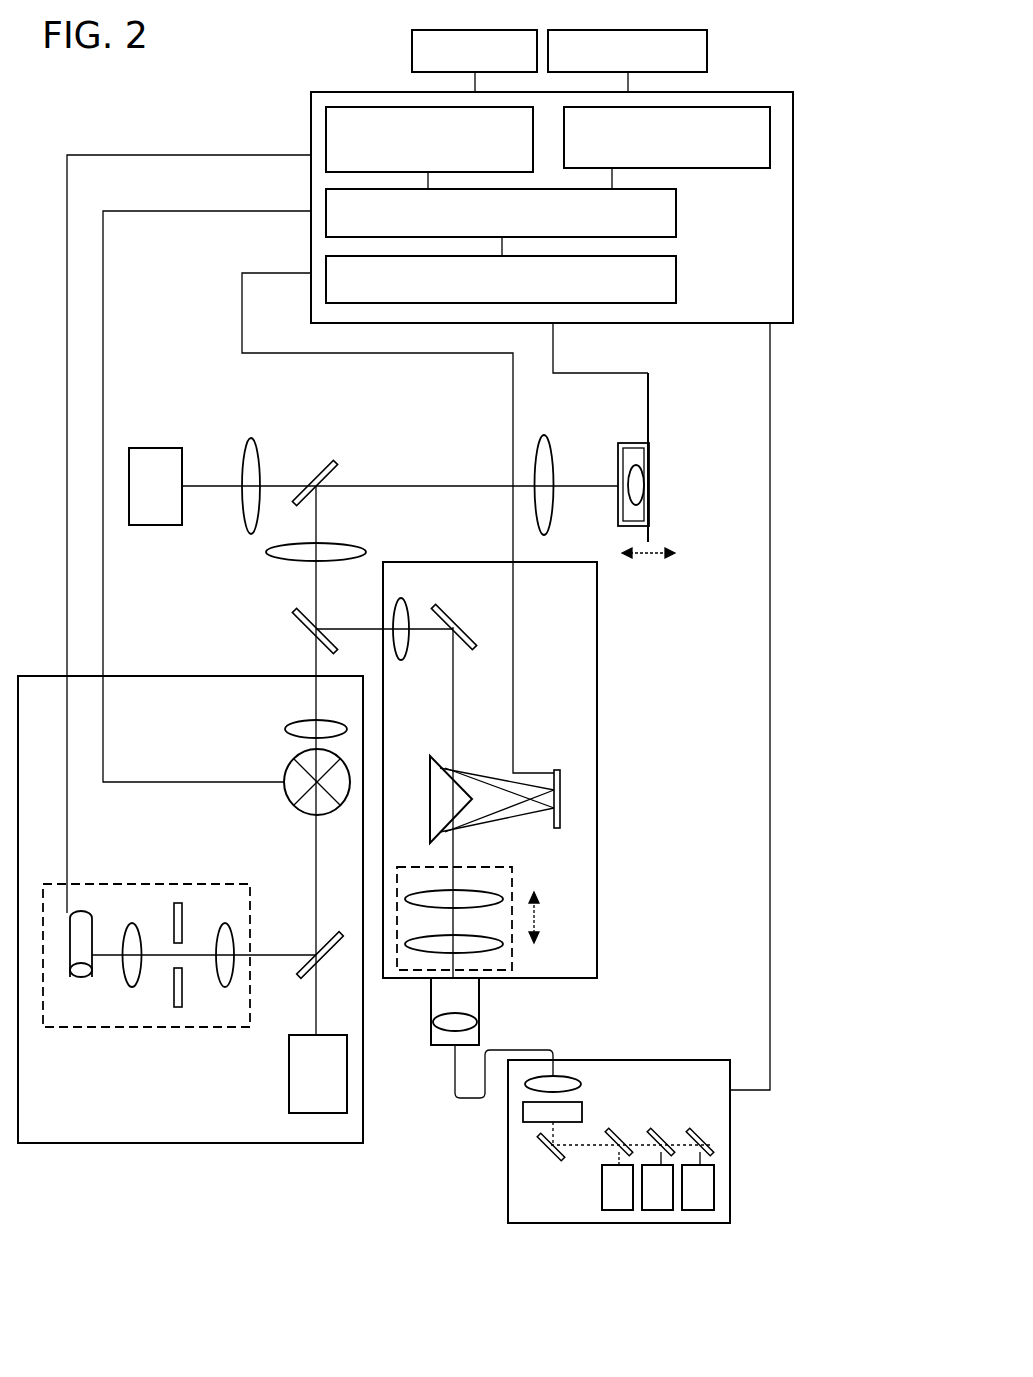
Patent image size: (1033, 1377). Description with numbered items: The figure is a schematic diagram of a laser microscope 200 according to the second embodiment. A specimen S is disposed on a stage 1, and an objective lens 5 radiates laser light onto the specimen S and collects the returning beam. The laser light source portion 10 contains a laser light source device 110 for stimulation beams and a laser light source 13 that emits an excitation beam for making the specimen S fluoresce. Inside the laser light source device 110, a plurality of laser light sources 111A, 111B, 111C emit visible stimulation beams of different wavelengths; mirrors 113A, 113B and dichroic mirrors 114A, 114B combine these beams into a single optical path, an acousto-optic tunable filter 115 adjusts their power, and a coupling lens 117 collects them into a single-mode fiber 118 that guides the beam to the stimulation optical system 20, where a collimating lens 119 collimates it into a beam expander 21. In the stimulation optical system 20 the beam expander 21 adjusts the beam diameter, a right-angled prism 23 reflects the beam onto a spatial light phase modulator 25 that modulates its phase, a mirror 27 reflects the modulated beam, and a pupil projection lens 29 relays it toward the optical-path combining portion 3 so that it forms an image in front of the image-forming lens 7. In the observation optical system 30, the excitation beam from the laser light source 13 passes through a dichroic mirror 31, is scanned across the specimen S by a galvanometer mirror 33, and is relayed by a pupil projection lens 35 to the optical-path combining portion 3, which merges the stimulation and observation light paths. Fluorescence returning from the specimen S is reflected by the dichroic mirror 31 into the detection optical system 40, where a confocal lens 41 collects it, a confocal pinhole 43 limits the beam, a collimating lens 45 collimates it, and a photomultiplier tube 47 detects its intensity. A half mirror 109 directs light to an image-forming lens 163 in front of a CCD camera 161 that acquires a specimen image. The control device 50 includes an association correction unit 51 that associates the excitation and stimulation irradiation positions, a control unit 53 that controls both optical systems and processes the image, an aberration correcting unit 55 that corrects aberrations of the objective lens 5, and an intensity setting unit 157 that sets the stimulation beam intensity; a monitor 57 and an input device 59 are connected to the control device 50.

The stage 1 is at (650, 532).
The optical-path combining portion 3 is at (292, 631).
The objective lens 5 is at (553, 440).
The image-forming lens 7 is at (266, 552).
The laser light source portion 10 is at (450, 1200).
The laser light source 13 is at (313, 1113).
The stimulation optical system 20 is at (597, 864).
The beam expander 21 is at (512, 882).
The right-angled prism 23 is at (428, 790).
The spatial light phase modulator 25 is at (561, 816).
The mirror 27 is at (468, 621).
The pupil projection lens 29 is at (402, 598).
The observation optical system 30 is at (140, 1145).
The dichroic mirror 31 is at (331, 935).
The galvanometer mirror 33 is at (288, 798).
The pupil projection lens 35 is at (286, 729).
The detection optical system 40 is at (133, 884).
The confocal lens 41 is at (225, 988).
The confocal pinhole 43 is at (177, 1008).
The collimating lens 45 is at (132, 988).
The photomultiplier tube 47 is at (81, 978).
The control device 50 is at (311, 183).
The association correction unit 51 is at (326, 125).
The control unit 53 is at (676, 212).
The aberration correcting unit 55 is at (676, 279).
The monitor 57 is at (412, 49).
The input device 59 is at (707, 50).
The half mirror 109 is at (323, 462).
The laser light source device 110 is at (508, 1183).
The laser light source 111A is at (617, 1212).
The laser light source 111B is at (658, 1212).
The laser light source 111C is at (716, 1188).
The mirror 113A is at (554, 1160).
The mirror 113B is at (712, 1141).
The dichroic mirror 114A is at (617, 1130).
The dichroic mirror 114B is at (665, 1132).
The acousto-optic tunable filter 115 is at (523, 1112).
The coupling lens 117 is at (567, 1076).
The single-mode fiber 118 is at (455, 1083).
The collimating lens 119 is at (479, 1023).
The intensity setting unit 157 is at (770, 140).
The CCD camera 161 is at (157, 448).
The image-forming lens 163 is at (251, 438).
The laser microscope 200 is at (696, 960).
The specimen S is at (644, 468).